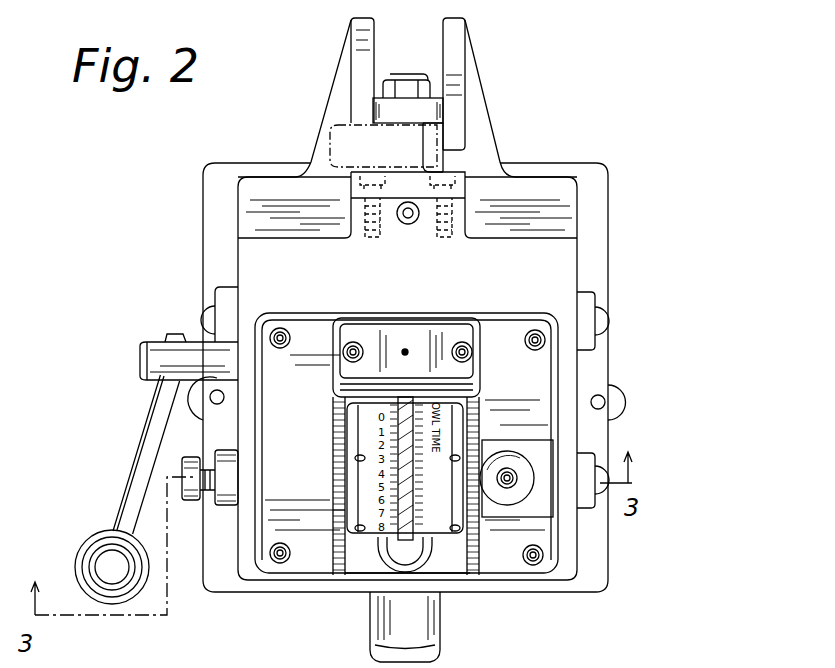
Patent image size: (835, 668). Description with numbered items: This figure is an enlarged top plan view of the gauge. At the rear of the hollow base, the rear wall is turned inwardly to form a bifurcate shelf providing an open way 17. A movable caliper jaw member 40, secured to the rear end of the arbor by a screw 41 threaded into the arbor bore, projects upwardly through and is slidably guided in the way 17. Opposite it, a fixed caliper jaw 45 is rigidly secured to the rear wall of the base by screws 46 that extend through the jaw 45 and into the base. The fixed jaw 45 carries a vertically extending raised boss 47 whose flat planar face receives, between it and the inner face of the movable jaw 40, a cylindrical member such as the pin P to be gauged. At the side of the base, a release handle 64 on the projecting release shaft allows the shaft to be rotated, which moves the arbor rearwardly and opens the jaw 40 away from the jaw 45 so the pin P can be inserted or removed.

The open way 17 is at (448, 52).
The screw 41 is at (404, 92).
The caliper jaw member 40 is at (443, 108).
The raised boss 47 is at (408, 165).
The fixed caliper jaw 45 is at (460, 182).
The screws 46 is at (375, 238).
The release handle 64 is at (136, 468).
The pin P is at (330, 130).